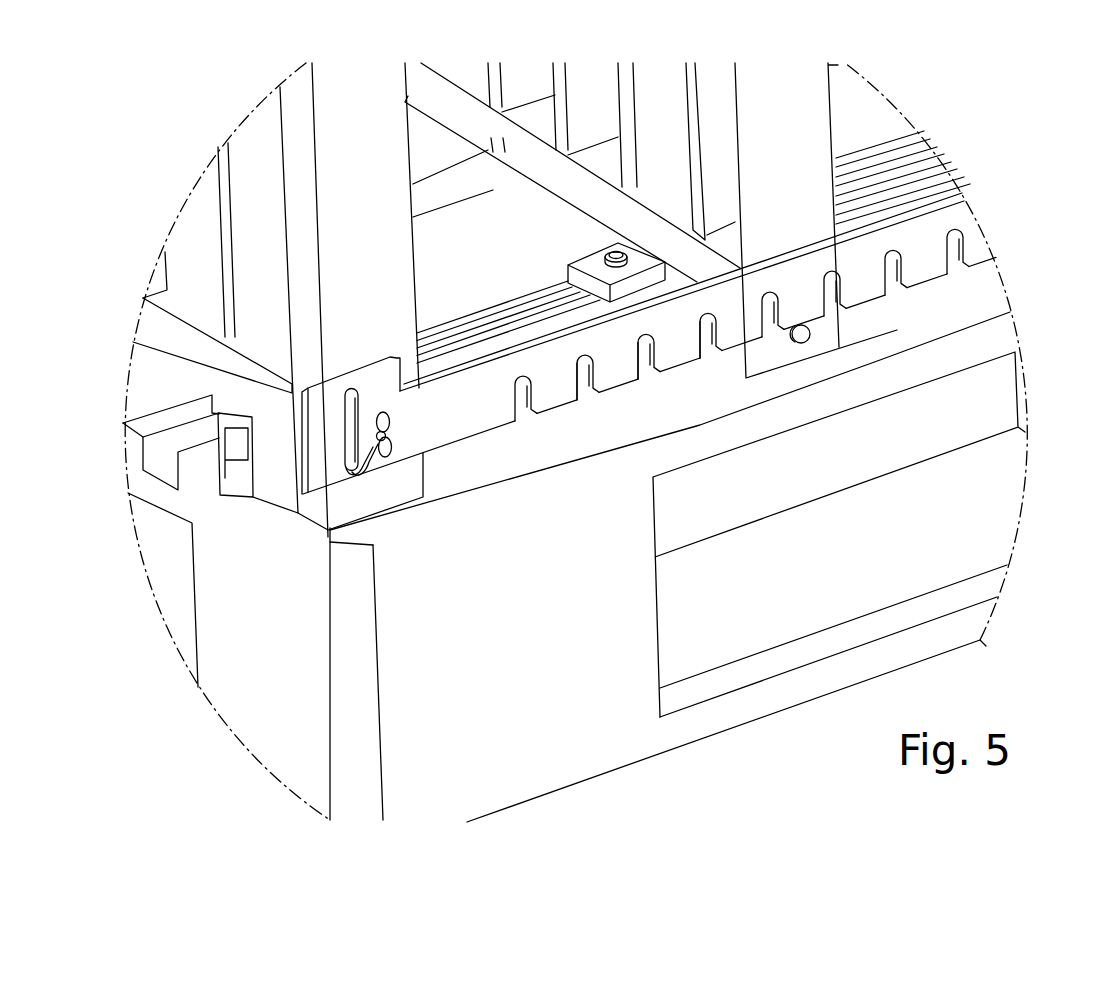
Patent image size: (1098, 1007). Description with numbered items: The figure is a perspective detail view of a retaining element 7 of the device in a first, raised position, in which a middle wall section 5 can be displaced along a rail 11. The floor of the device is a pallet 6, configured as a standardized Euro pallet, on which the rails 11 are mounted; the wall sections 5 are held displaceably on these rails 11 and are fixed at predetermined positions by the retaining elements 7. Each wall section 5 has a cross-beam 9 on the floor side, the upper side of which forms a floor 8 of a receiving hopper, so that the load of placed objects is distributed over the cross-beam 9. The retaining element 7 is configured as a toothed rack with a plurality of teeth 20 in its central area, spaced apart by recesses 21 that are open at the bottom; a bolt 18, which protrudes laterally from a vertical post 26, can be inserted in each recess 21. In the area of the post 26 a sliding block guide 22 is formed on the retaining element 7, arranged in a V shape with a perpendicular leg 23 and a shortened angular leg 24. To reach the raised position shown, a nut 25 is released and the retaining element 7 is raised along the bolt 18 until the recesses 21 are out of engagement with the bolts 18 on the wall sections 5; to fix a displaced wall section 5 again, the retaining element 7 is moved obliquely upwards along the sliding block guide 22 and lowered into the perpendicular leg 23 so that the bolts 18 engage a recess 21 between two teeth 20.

The wall section 5 is at (775, 120).
The pallet 6 is at (228, 617).
The retaining element 7 is at (492, 400).
The floor 8 is at (677, 203).
The cross-beam 9 is at (635, 224).
The rail 11 is at (933, 173).
The bolt 18 is at (810, 330).
The tooth 20 is at (731, 325).
The recess 21 is at (700, 340).
The sliding block guide 22 is at (297, 452).
The perpendicular leg 23 is at (350, 410).
The angular leg 24 is at (372, 452).
The nut 25 is at (393, 437).
The post 26 is at (352, 132).